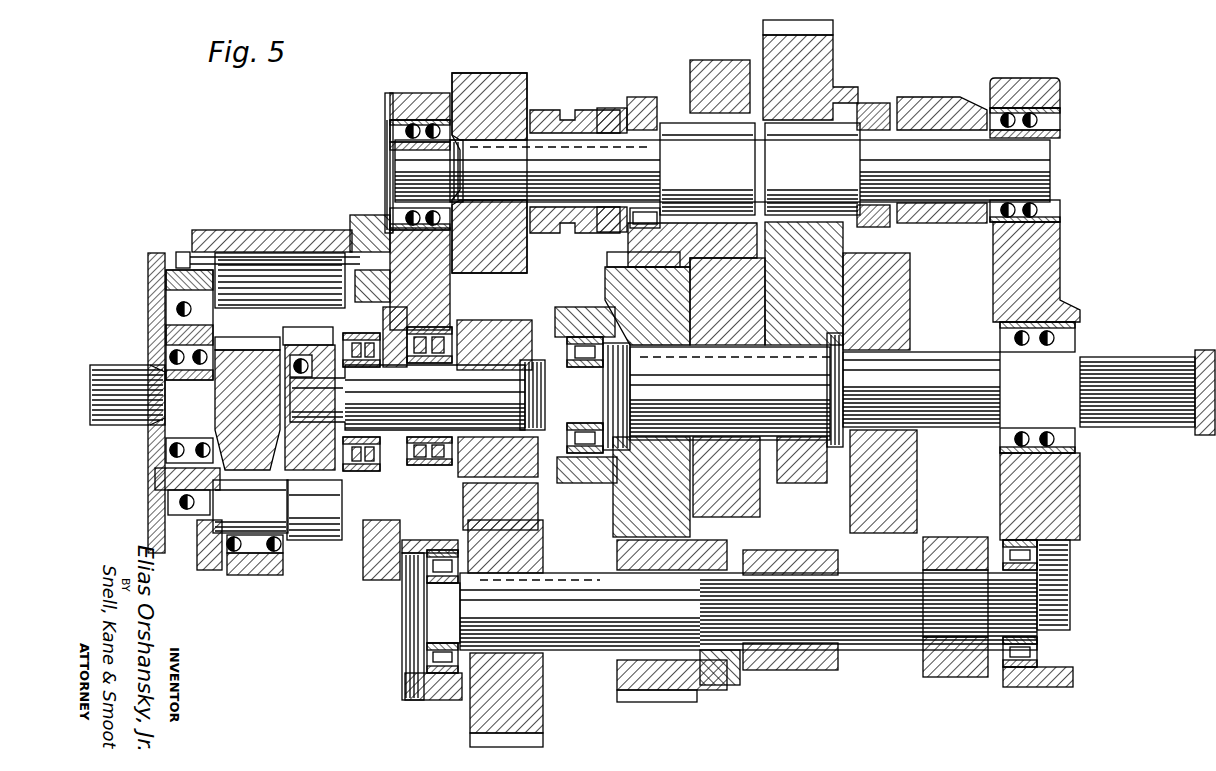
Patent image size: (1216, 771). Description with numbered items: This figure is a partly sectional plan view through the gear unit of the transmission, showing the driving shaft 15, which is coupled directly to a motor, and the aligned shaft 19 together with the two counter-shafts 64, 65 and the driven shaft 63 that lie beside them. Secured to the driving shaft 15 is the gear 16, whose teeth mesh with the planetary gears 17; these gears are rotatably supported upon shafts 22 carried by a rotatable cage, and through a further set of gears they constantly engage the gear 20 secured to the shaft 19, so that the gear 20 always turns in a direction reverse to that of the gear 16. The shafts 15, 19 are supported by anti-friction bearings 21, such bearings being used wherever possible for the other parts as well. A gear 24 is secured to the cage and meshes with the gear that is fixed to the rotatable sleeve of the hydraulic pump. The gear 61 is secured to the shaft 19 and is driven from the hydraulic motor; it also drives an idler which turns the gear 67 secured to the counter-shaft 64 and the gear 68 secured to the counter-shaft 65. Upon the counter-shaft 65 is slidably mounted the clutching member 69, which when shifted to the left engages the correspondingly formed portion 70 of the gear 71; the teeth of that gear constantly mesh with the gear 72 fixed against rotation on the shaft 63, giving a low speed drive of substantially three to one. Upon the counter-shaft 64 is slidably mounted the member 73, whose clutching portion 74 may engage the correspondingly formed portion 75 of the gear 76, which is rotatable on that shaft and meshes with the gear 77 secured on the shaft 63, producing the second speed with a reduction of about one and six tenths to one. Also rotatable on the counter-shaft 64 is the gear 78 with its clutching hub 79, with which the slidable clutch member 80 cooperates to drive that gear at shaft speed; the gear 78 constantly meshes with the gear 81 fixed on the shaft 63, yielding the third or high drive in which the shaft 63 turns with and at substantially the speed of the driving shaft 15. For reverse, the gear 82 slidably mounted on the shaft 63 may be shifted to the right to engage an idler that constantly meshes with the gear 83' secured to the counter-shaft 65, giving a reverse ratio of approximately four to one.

The driving shaft 15 is at (118, 380).
The gear 16 is at (262, 322).
The gear 17 is at (250, 572).
The shaft 19 is at (417, 395).
The gear 20 is at (322, 472).
The anti-friction bearings 21 is at (172, 452).
The shaft 22 is at (250, 506).
The gear 24 is at (362, 228).
The gear 61 is at (486, 345).
The driven shaft 63 is at (922, 393).
The counter-shaft 64 is at (722, 169).
The counter-shaft 65 is at (748, 611).
The gear 67 is at (492, 92).
The gear 68 is at (525, 740).
The clutching member 69 is at (815, 660).
The clutching portion 70 is at (735, 668).
The gear 71 is at (682, 692).
The gear 72 is at (627, 506).
The member 73 is at (548, 108).
The clutching portion 74 is at (607, 106).
The clutching portion 75 is at (636, 100).
The gear 76 is at (706, 92).
The gear 77 is at (755, 500).
The gear 78 is at (820, 68).
The clutching portion or hub 79 is at (886, 104).
The clutch member 80 is at (960, 100).
The gear 81 is at (822, 462).
The gear 82 is at (892, 288).
The gear 83' is at (955, 632).